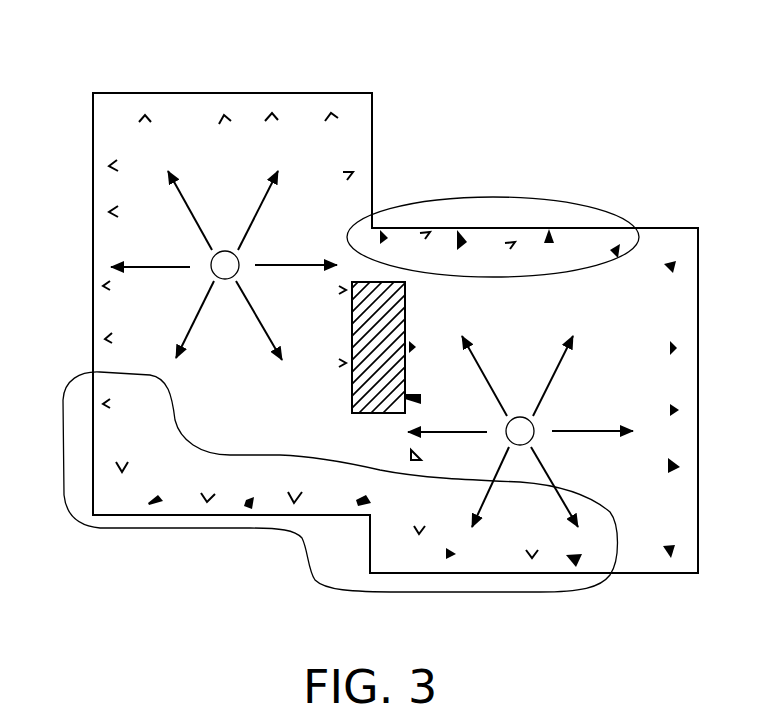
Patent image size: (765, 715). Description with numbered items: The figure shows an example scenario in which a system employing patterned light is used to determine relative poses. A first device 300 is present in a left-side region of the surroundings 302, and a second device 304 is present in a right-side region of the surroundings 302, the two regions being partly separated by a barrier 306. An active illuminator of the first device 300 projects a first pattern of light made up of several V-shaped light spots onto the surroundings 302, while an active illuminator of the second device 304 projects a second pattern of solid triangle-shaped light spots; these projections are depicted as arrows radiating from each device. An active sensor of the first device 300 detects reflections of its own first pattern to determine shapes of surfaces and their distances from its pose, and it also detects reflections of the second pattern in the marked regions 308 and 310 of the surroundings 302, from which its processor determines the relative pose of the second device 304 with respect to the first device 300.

The first device 300 is at (226, 251).
The surroundings 302 is at (636, 66).
The second device 304 is at (518, 416).
The barrier 306 is at (352, 385).
The marked region 308 is at (457, 197).
The marked region 310 is at (126, 530).